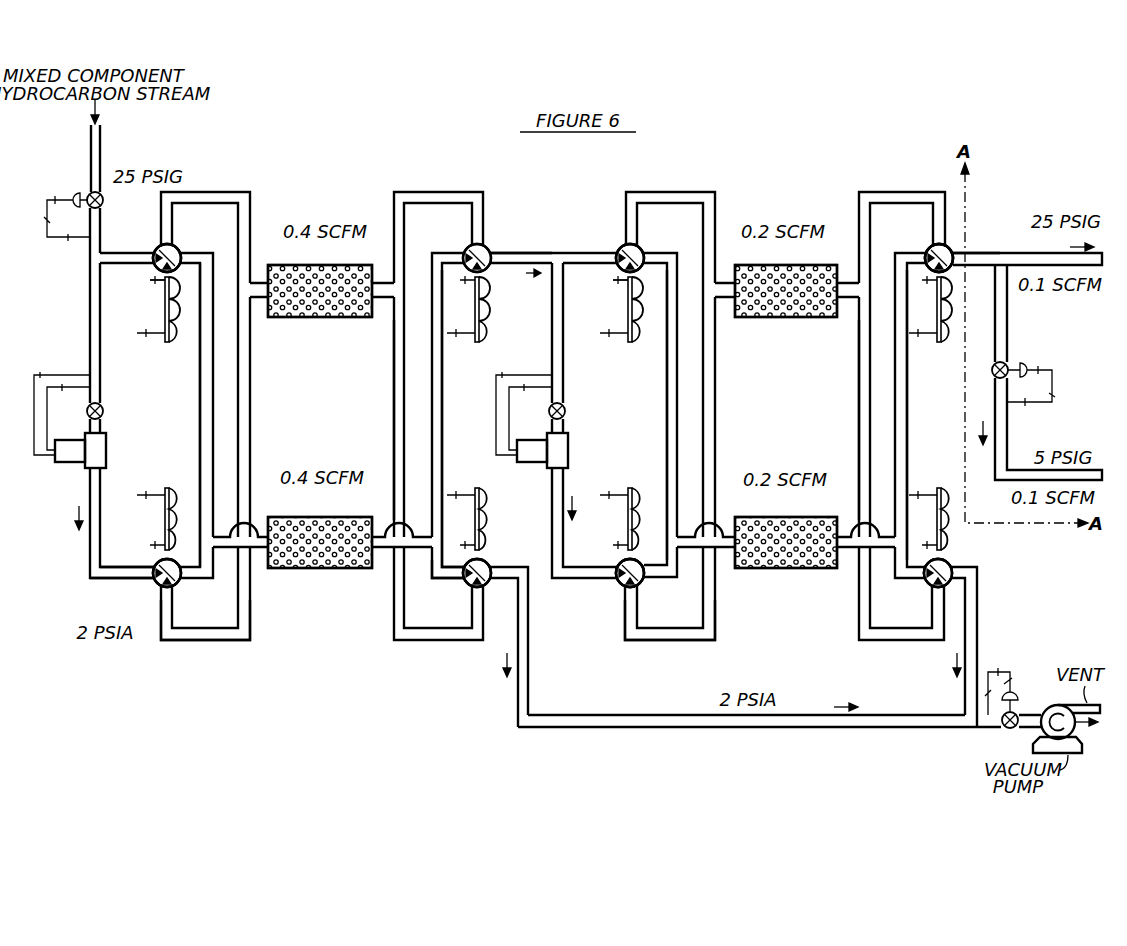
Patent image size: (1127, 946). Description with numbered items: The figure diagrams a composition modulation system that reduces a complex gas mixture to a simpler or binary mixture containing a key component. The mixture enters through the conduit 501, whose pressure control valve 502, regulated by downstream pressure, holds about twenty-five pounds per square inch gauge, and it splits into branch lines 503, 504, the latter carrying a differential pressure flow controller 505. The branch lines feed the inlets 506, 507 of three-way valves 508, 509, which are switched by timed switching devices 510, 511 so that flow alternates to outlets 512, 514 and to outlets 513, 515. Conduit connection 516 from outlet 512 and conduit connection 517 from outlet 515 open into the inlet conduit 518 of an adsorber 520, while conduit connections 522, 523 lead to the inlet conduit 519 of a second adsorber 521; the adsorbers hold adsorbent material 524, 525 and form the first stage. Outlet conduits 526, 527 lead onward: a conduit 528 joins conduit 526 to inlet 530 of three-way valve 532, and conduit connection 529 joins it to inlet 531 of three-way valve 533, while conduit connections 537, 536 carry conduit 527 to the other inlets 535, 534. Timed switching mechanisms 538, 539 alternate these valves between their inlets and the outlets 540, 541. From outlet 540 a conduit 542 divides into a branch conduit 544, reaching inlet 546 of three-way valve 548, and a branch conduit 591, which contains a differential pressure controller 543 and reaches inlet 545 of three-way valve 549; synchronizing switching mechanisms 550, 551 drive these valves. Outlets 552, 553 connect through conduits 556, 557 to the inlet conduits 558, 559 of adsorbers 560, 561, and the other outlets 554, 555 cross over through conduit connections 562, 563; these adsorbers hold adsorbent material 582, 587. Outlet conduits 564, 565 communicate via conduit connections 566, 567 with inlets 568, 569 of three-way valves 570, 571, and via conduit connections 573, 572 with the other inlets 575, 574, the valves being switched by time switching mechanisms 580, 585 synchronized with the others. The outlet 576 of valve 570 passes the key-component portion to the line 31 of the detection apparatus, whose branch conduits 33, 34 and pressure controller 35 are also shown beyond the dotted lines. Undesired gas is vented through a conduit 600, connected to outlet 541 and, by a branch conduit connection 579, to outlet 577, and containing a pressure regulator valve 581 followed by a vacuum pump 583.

The conduit 501 is at (90, 140).
The pressure control valve 502 is at (88, 193).
The branch line 503 is at (129, 252).
The branch line 504 is at (88, 323).
The differential pressure flow controller 505 is at (108, 440).
The inlet 506 is at (158, 246).
The inlet 507 is at (150, 581).
The three-way valve 508 is at (150, 279).
The three-way valve 509 is at (155, 566).
The timed switching device 510 is at (160, 306).
The timed switching device 511 is at (162, 520).
The outlet 512 is at (178, 248).
The outlet 513 is at (183, 588).
The outlet 514 is at (181, 257).
The outlet 515 is at (158, 588).
The conduit connection 516 is at (198, 192).
The conduit connection 517 is at (208, 642).
The inlet conduit 518 is at (261, 281).
The inlet conduit 519 is at (260, 535).
The adsorber 520 is at (304, 263).
The second adsorber 521 is at (296, 514).
The conduit connection 522 is at (199, 383).
The conduit connection 523 is at (204, 575).
The adsorbent material 524 is at (340, 318).
The adsorbent material 525 is at (338, 570).
The outlet conduit 526 is at (385, 281).
The outlet conduit 527 is at (382, 535).
The conduit 528 is at (451, 193).
The conduit connection 529 is at (393, 378).
The inlet 530 is at (470, 246).
The inlet 531 is at (488, 586).
The three-way valve 532 is at (491, 253).
The three-way valve 533 is at (488, 562).
The inlet 534 is at (464, 254).
The inlet 535 is at (464, 584).
The conduit connection 536 is at (443, 378).
The conduit connection 537 is at (431, 576).
The timed switching mechanism 538 is at (492, 307).
The timed switching mechanism 539 is at (491, 503).
The outlet 540 is at (515, 276).
The outlet 541 is at (492, 569).
The conduit 542 is at (538, 250).
The differential pressure controller 543 is at (570, 440).
The branch conduit 544 is at (590, 252).
The inlet 545 is at (614, 581).
The inlet 546 is at (621, 247).
The three-way valve 548 is at (613, 279).
The three-way valve 549 is at (618, 565).
The synchronizing switching mechanism 550 is at (623, 313).
The synchronizing switching mechanism 551 is at (623, 514).
The outlet 552 is at (640, 248).
The outlet 553 is at (650, 588).
The outlet 554 is at (645, 257).
The outlet 555 is at (621, 588).
The conduit 556 is at (680, 195).
The conduit 557 is at (682, 578).
The inlet conduit 558 is at (729, 281).
The inlet conduit 559 is at (726, 535).
The adsorber 560 is at (772, 264).
The adsorber 561 is at (762, 514).
The conduit connection 562 is at (666, 376).
The conduit connection 563 is at (670, 642).
The outlet conduit 564 is at (847, 281).
The outlet conduit 565 is at (845, 535).
The conduit connection 566 is at (913, 197).
The conduit connection 567 is at (894, 579).
The inlet 568 is at (930, 247).
The inlet 569 is at (924, 584).
The three-way valve 570 is at (953, 258).
The three-way valve 571 is at (950, 560).
The conduit connection 572 is at (906, 377).
The conduit connection 573 is at (858, 377).
The inlet 574 is at (925, 255).
The inlet 575 is at (928, 590).
The outlet 576 is at (952, 270).
The outlet 577 is at (953, 567).
The branch conduit connection 579 is at (979, 622).
The time switching mechanism 580 is at (953, 310).
The pressure regulator valve 581 is at (1008, 731).
The adsorbent material 582 is at (803, 318).
The vacuum pump 583 is at (1040, 712).
The time switching mechanism 585 is at (952, 508).
The adsorbent material 587 is at (800, 570).
The branch conduit 591 is at (551, 347).
The conduit 600 is at (668, 729).
The conduit 31 is at (988, 251).
The branch conduit 33 is at (1051, 259).
The branch conduit 34 is at (1008, 335).
The pressure controller 35 is at (992, 370).